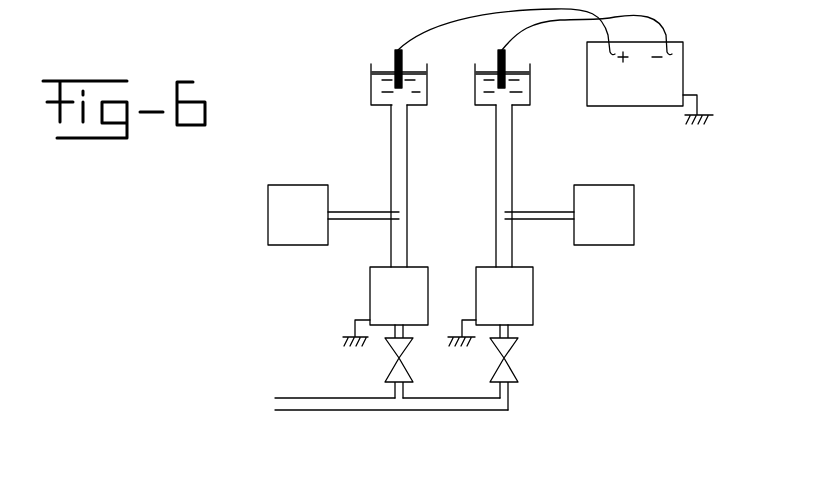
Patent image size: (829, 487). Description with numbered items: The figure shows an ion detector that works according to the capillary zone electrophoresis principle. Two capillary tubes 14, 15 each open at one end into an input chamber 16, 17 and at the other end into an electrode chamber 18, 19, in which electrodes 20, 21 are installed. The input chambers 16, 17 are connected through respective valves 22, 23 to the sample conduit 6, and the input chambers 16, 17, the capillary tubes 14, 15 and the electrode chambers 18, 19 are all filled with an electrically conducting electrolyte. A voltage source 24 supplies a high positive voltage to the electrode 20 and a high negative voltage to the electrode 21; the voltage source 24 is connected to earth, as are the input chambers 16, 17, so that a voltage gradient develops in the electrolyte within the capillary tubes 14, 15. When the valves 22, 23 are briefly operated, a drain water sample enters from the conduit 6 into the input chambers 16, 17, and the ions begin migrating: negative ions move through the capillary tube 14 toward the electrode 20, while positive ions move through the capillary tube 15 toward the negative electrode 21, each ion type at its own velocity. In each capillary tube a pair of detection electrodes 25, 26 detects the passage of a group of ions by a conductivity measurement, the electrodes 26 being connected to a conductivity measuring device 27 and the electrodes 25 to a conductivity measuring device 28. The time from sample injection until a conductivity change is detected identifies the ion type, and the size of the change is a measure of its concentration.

The sample conduit 6 is at (298, 410).
The capillary tube 14 is at (391, 147).
The capillary tube 15 is at (512, 157).
The input chamber 16 is at (370, 282).
The input chamber 17 is at (524, 288).
The electrode chamber 18 is at (371, 92).
The electrode chamber 19 is at (530, 98).
The electrode 20 is at (395, 60).
The electrode 21 is at (498, 52).
The valve 22 is at (392, 368).
The valve 23 is at (512, 374).
The voltage source 24 is at (683, 60).
The detection electrodes 25 is at (352, 212).
The detection electrodes 26 is at (540, 212).
The conductivity measuring device 27 is at (634, 218).
The conductivity measuring device 28 is at (268, 210).